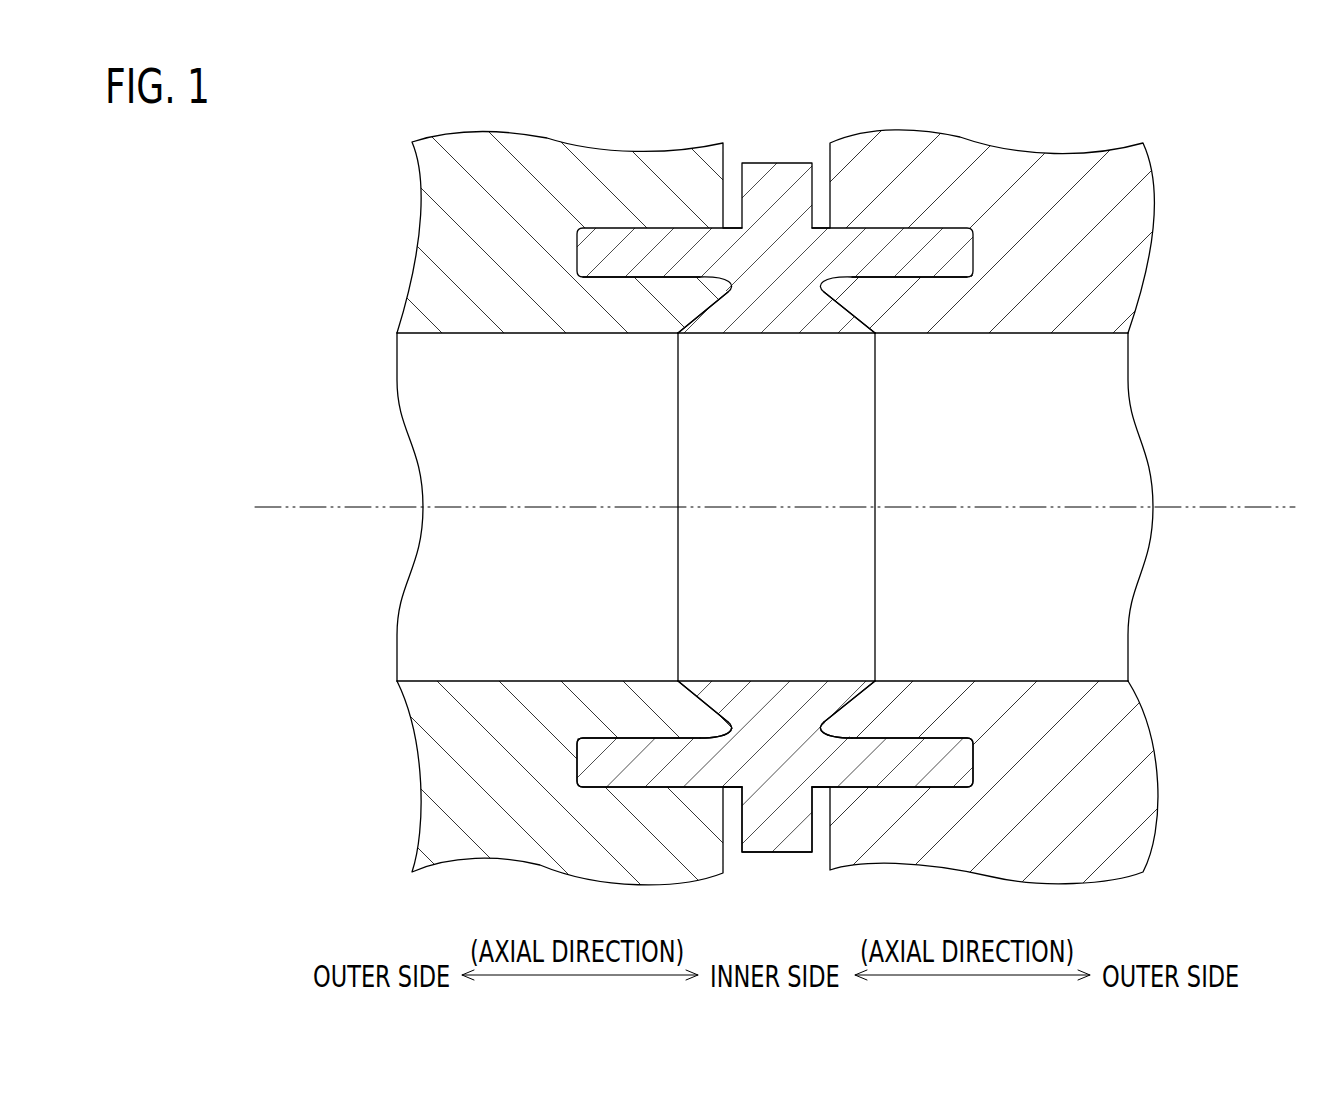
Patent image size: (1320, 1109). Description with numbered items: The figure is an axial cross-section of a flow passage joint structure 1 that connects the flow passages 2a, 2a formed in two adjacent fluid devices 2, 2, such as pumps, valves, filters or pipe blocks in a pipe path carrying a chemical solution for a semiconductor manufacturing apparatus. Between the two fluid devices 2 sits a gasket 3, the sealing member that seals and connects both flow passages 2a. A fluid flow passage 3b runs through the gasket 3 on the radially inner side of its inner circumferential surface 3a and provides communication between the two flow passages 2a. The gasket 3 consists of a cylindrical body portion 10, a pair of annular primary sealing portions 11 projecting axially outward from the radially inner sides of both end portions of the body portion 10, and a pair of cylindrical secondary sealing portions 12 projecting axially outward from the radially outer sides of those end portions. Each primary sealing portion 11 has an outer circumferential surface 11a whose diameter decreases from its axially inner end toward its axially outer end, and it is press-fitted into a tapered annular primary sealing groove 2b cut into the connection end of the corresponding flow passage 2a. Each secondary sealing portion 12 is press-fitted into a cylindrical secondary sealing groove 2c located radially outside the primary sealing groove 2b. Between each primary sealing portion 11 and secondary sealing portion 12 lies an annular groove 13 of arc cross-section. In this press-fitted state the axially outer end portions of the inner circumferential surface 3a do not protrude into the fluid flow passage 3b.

The flow passage joint structure 1 is at (317, 148).
The fluid device 2 is at (412, 229).
The flow passage 2a is at (550, 492).
The primary sealing groove 2b is at (722, 297).
The secondary sealing groove 2c is at (643, 268).
The gasket 3 is at (786, 147).
The inner circumferential surface 3a is at (773, 335).
The fluid flow passage 3b is at (795, 492).
The body portion 10 is at (780, 728).
The primary sealing portion 11 is at (716, 692).
The outer circumferential surface 11a is at (688, 705).
The secondary sealing portion 12 is at (605, 765).
The annular groove 13 is at (703, 740).